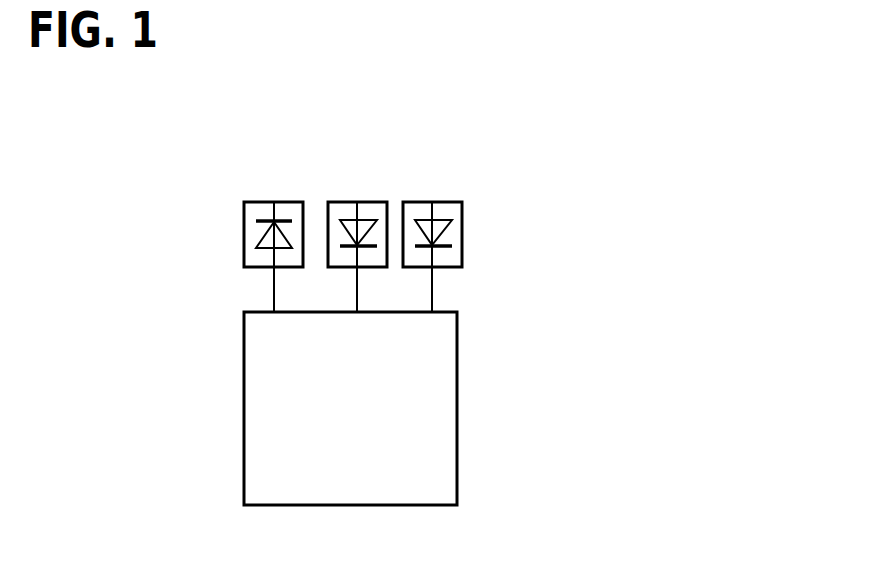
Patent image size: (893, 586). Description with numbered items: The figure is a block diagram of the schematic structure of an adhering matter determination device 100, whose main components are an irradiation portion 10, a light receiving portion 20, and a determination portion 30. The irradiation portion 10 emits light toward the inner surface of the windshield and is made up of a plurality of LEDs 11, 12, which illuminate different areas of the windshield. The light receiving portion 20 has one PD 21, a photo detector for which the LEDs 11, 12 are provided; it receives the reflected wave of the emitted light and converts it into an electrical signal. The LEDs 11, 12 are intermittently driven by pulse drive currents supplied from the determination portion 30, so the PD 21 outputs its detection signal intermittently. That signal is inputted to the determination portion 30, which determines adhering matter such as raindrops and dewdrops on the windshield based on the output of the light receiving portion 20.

The adhering matter determination device 100 is at (572, 94).
The irradiation portion 10 is at (448, 145).
The LED 11 is at (347, 202).
The LED 12 is at (423, 202).
The light receiving portion 20 is at (262, 202).
The PD 21 is at (278, 196).
The determination portion 30 is at (377, 507).